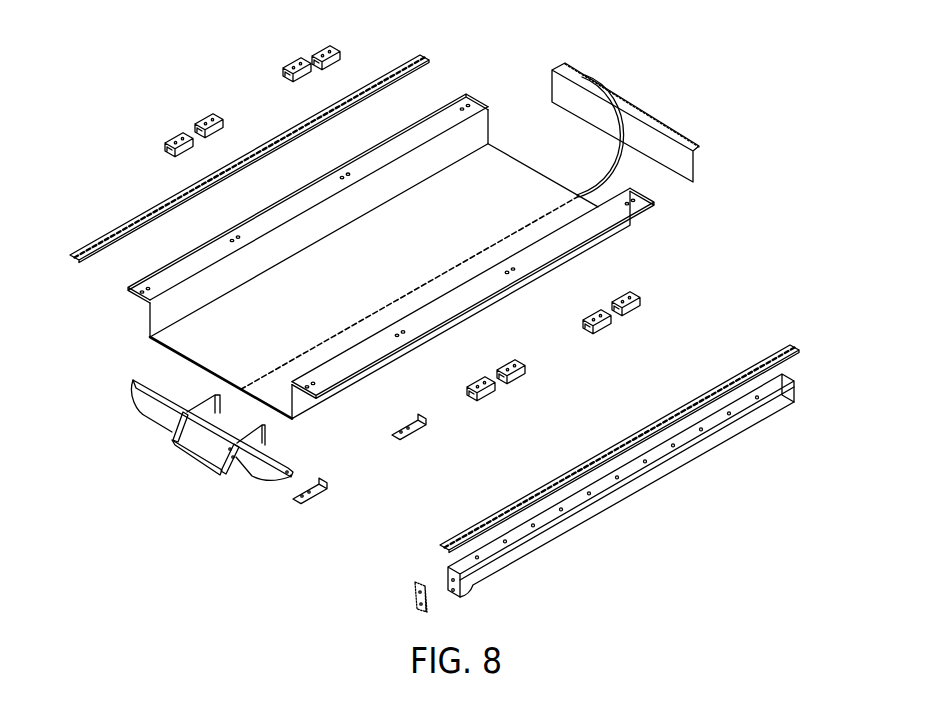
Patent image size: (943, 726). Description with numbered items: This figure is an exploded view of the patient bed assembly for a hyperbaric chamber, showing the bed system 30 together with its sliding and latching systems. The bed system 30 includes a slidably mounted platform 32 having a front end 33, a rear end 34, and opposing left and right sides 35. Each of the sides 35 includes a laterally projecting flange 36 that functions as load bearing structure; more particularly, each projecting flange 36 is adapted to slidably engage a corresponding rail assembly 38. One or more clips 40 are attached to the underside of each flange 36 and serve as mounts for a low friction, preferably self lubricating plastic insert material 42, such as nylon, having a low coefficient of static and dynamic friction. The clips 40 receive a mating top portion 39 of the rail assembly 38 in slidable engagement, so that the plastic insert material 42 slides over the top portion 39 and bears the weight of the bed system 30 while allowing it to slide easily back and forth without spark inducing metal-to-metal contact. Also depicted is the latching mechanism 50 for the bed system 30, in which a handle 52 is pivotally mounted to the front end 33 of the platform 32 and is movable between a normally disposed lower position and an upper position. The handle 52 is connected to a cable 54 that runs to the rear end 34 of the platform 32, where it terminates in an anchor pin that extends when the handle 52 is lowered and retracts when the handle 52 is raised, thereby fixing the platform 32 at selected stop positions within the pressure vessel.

The bed system 30 is at (122, 318).
The platform 32 is at (383, 278).
The front end 33 is at (153, 404).
The rear end 34 is at (660, 128).
The sides 35 is at (348, 350).
The flange 36 is at (455, 103).
The rail assembly 38 is at (805, 332).
The top portion 39 is at (73, 263).
The clips 40 is at (323, 47).
The plastic insert material 42 is at (313, 494).
The latching mechanism 50 is at (202, 490).
The handle 52 is at (195, 457).
The cable 54 is at (610, 160).